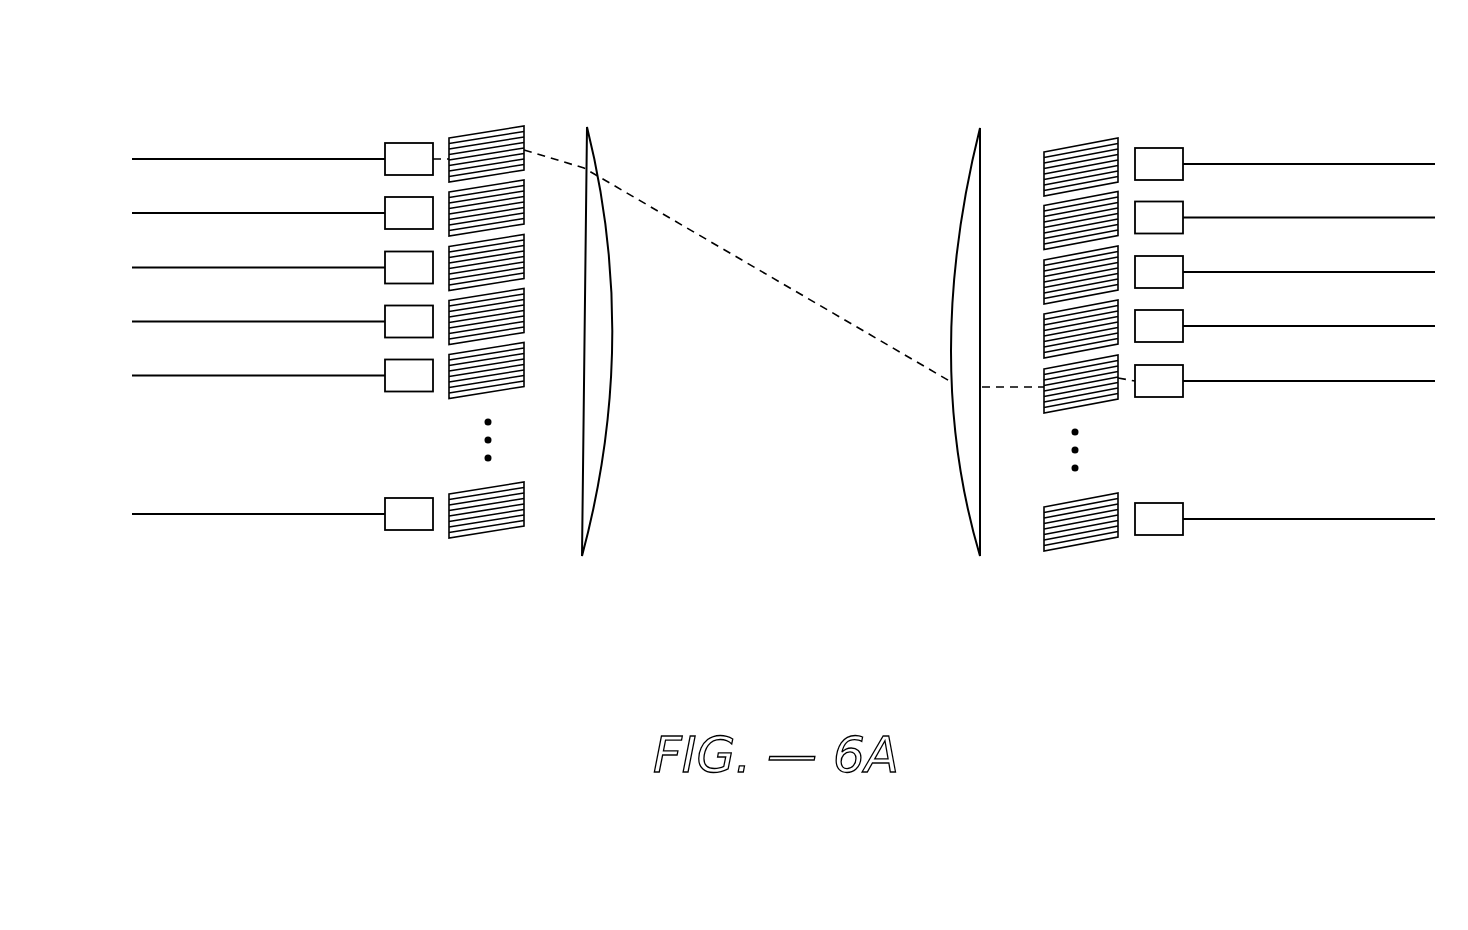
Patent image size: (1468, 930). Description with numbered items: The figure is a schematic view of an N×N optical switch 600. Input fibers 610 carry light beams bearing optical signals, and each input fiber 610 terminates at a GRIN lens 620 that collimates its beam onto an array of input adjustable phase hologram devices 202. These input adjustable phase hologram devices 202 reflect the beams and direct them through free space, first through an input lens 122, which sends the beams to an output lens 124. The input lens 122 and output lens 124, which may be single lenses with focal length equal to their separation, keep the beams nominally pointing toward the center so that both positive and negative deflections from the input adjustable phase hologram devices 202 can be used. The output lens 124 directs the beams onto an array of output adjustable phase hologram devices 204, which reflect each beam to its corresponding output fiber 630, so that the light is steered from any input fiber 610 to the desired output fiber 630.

The N×N optical switch 600 is at (203, 33).
The input fibers 610 is at (292, 157).
The GRIN lens 620 is at (405, 143).
The input adjustable phase hologram devices 202 is at (480, 130).
The output adjustable phase hologram devices 204 is at (1073, 145).
The input lens 122 is at (600, 153).
The output lens 124 is at (966, 152).
The output fibers 630 is at (1277, 160).